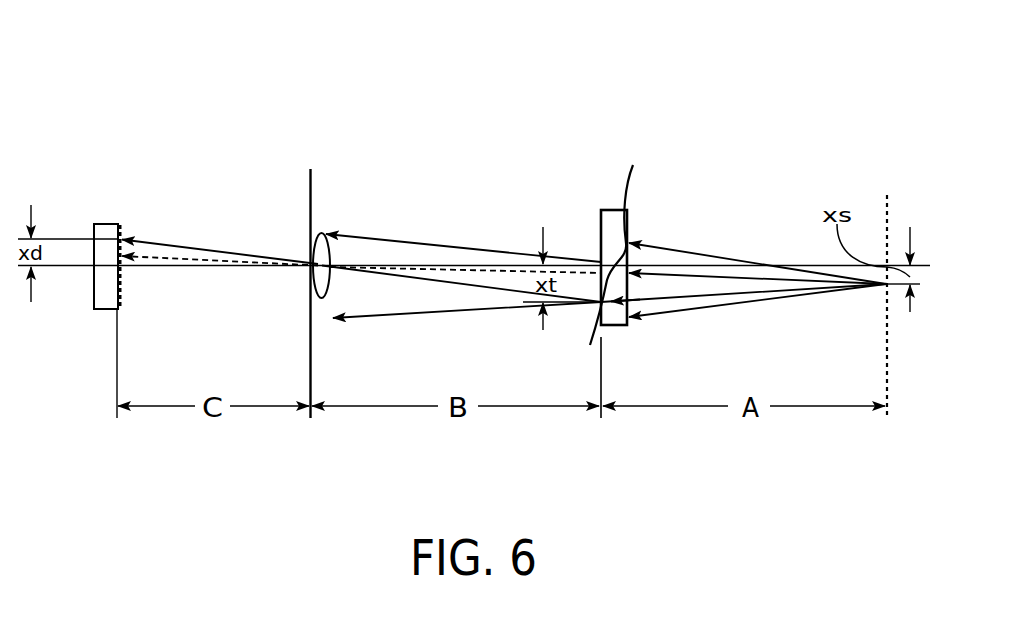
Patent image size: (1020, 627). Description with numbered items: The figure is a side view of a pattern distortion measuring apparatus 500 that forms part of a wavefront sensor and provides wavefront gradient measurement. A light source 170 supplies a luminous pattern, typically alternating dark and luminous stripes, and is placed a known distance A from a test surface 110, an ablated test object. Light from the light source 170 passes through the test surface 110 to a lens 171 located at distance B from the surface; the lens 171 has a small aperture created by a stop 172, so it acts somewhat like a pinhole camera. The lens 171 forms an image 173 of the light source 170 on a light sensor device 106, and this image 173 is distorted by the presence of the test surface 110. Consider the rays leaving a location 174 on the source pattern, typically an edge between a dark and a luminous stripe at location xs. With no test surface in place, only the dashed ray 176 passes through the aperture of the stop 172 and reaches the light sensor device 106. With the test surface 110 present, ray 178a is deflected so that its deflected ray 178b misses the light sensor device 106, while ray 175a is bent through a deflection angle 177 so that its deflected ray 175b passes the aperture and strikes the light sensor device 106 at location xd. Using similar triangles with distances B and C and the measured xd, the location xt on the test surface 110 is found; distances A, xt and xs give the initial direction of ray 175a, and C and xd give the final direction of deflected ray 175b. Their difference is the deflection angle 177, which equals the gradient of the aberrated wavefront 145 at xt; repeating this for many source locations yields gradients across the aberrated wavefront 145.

The pattern distortion measuring apparatus 500 is at (520, 70).
The light sensor device 106 is at (110, 224).
The image 173 is at (125, 236).
The dashed ray 176 is at (180, 258).
The stop 172 is at (309, 225).
The lens 171 is at (319, 233).
The deflected ray 178b is at (367, 237).
The deflected ray 175b is at (413, 267).
The test surface 110 is at (611, 210).
The aberrated wavefront 145 is at (600, 233).
The ray 175a is at (681, 297).
The ray 178a is at (681, 279).
The deflection angle 177 is at (420, 313).
The light source 170 is at (885, 207).
The location 174 is at (884, 290).